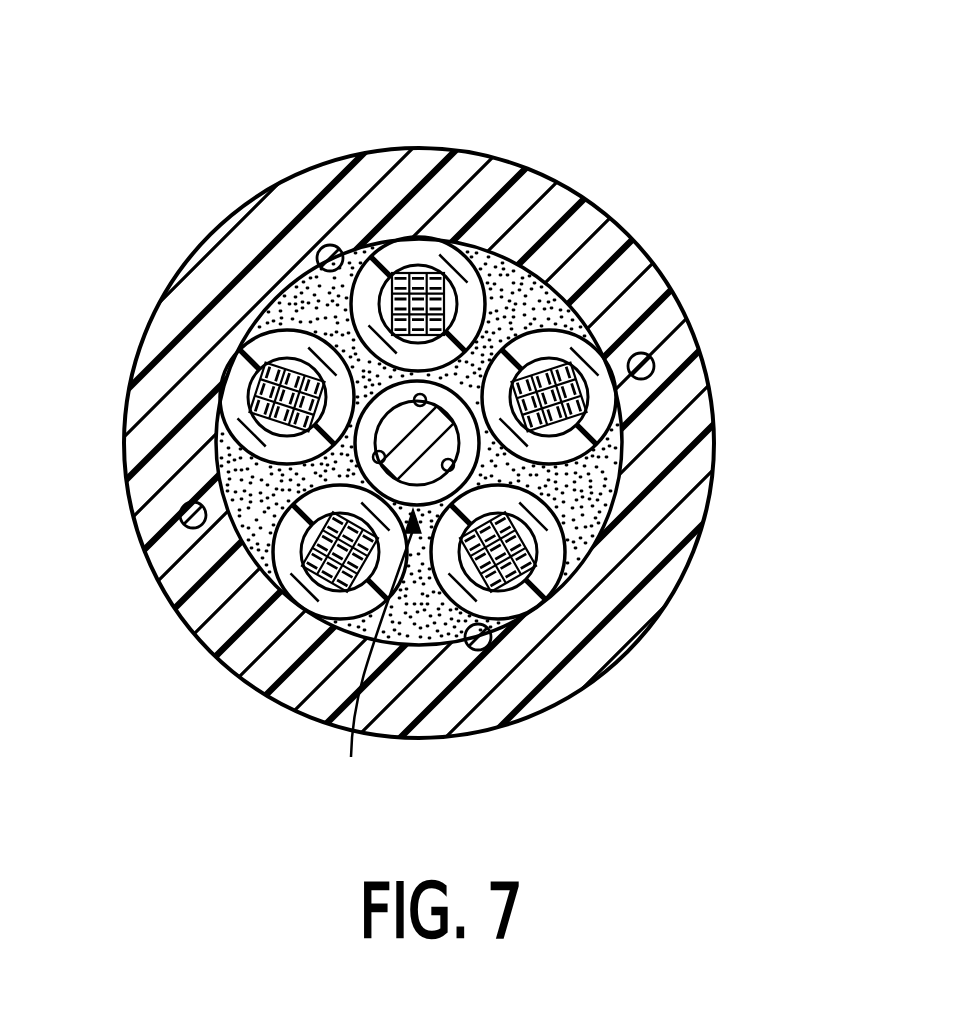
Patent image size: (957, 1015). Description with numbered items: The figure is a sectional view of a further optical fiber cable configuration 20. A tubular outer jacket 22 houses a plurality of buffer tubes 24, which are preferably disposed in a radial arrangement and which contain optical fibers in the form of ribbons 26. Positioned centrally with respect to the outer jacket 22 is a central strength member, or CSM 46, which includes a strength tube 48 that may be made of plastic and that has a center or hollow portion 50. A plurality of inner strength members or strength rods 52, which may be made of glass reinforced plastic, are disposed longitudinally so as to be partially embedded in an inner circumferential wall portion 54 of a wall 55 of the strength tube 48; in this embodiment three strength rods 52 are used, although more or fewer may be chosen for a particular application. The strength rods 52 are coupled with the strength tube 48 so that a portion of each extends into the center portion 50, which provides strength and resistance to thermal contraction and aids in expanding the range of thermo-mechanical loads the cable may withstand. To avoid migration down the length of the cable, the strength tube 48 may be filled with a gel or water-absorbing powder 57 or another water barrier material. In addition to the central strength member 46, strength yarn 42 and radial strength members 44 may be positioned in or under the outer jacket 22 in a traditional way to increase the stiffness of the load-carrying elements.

The optical fiber cable configuration 20 is at (532, 130).
The tubular outer jacket 22 is at (712, 424).
The buffer tubes 24 is at (271, 322).
The ribbons 26 is at (262, 328).
The strength yarn 42 is at (322, 248).
The radial strength members 44 is at (650, 357).
The central strength member (CSM) 46 is at (377, 657).
The strength tube 48 is at (456, 464).
The center or hollow portion 50 is at (455, 450).
The strength rods 52 is at (373, 459).
The inner circumferential wall portion 54 is at (180, 518).
The wall 55 is at (305, 332).
The gel or water-absorbing powder 57 is at (427, 396).